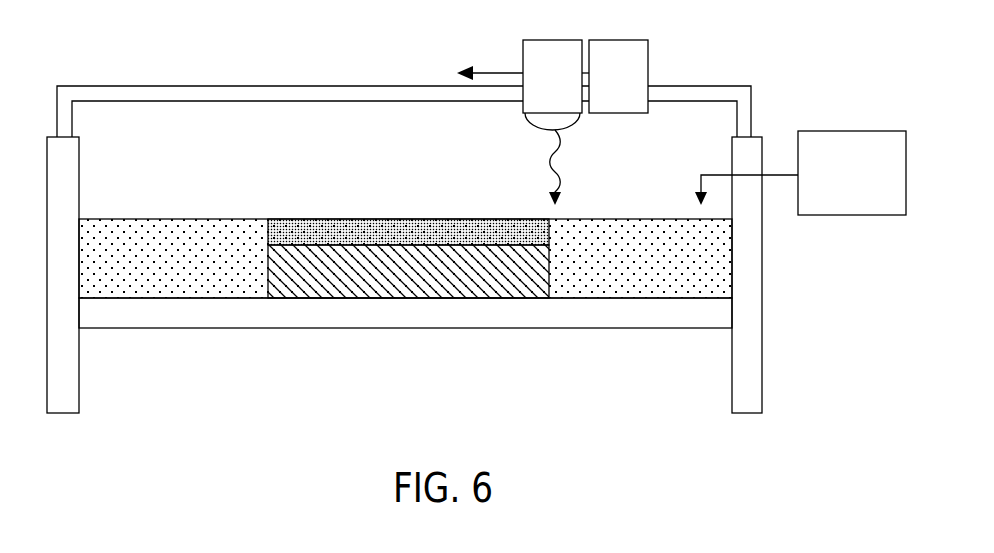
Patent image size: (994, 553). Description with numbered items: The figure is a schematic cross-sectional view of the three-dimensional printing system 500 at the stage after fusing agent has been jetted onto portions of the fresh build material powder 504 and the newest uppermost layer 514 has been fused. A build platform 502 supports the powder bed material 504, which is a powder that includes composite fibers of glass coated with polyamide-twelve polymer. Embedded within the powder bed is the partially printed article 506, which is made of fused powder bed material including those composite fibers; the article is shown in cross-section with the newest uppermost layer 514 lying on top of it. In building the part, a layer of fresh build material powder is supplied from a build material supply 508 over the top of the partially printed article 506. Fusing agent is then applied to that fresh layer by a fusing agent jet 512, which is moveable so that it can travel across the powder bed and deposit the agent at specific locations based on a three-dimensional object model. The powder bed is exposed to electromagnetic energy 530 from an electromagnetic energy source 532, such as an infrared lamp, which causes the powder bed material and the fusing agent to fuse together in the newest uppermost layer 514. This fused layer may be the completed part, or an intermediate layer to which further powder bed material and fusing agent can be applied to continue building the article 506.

The 3D printing system 500 is at (143, 44).
The build platform 502 is at (580, 307).
The powder bed material 504 is at (230, 278).
The partially printed article 506 is at (435, 272).
The build material supply 508 is at (873, 185).
The fusing agent jet 512 is at (639, 86).
The newest uppermost layer 514 is at (295, 227).
The electromagnetic energy 530 is at (528, 153).
The electromagnetic energy source 532 is at (573, 86).